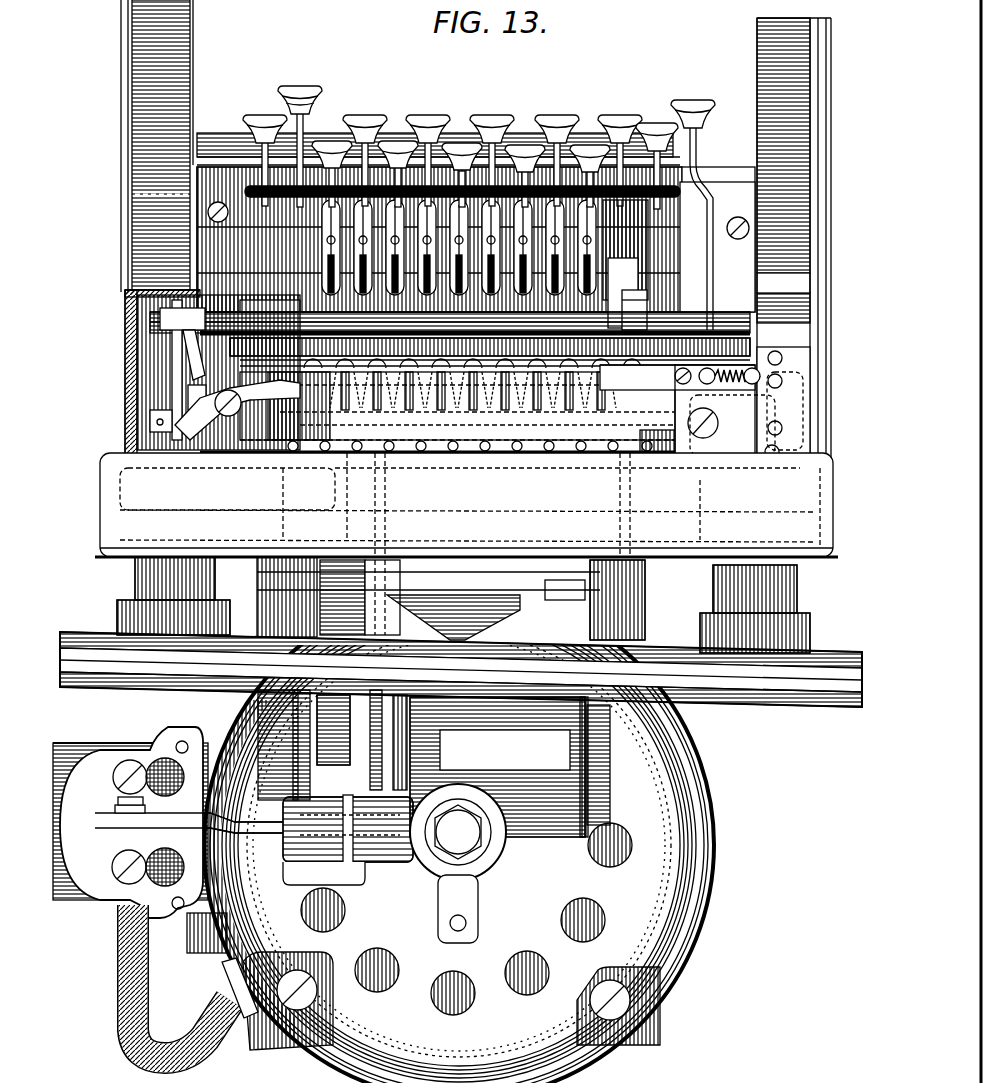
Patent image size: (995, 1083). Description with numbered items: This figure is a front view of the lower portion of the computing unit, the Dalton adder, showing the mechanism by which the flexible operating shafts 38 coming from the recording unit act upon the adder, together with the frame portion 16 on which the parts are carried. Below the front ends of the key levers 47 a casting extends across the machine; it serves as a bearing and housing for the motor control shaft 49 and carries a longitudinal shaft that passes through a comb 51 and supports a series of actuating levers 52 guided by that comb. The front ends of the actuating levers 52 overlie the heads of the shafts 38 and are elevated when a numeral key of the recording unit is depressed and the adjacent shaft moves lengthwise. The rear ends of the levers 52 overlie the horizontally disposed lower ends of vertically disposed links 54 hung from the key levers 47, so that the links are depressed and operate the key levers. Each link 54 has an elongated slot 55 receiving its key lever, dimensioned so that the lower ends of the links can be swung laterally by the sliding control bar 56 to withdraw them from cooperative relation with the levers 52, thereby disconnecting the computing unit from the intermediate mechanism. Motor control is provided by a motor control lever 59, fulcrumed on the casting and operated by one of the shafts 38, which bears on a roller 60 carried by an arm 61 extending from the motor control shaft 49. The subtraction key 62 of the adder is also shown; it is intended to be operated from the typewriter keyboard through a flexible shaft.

The base plate 16 is at (668, 443).
The flexible operating shafts 38 is at (546, 452).
The key levers 47 is at (463, 143).
The motor control shaft 49 is at (148, 422).
The comb 51 is at (285, 322).
The actuating levers 52 is at (527, 408).
The links 54 is at (650, 300).
The elongated slots 55 is at (612, 240).
The control bar 56 is at (687, 410).
The motor control lever 59 is at (175, 395).
The roller 60 is at (183, 470).
The arm 61 is at (180, 405).
The subtraction key 62 is at (657, 125).